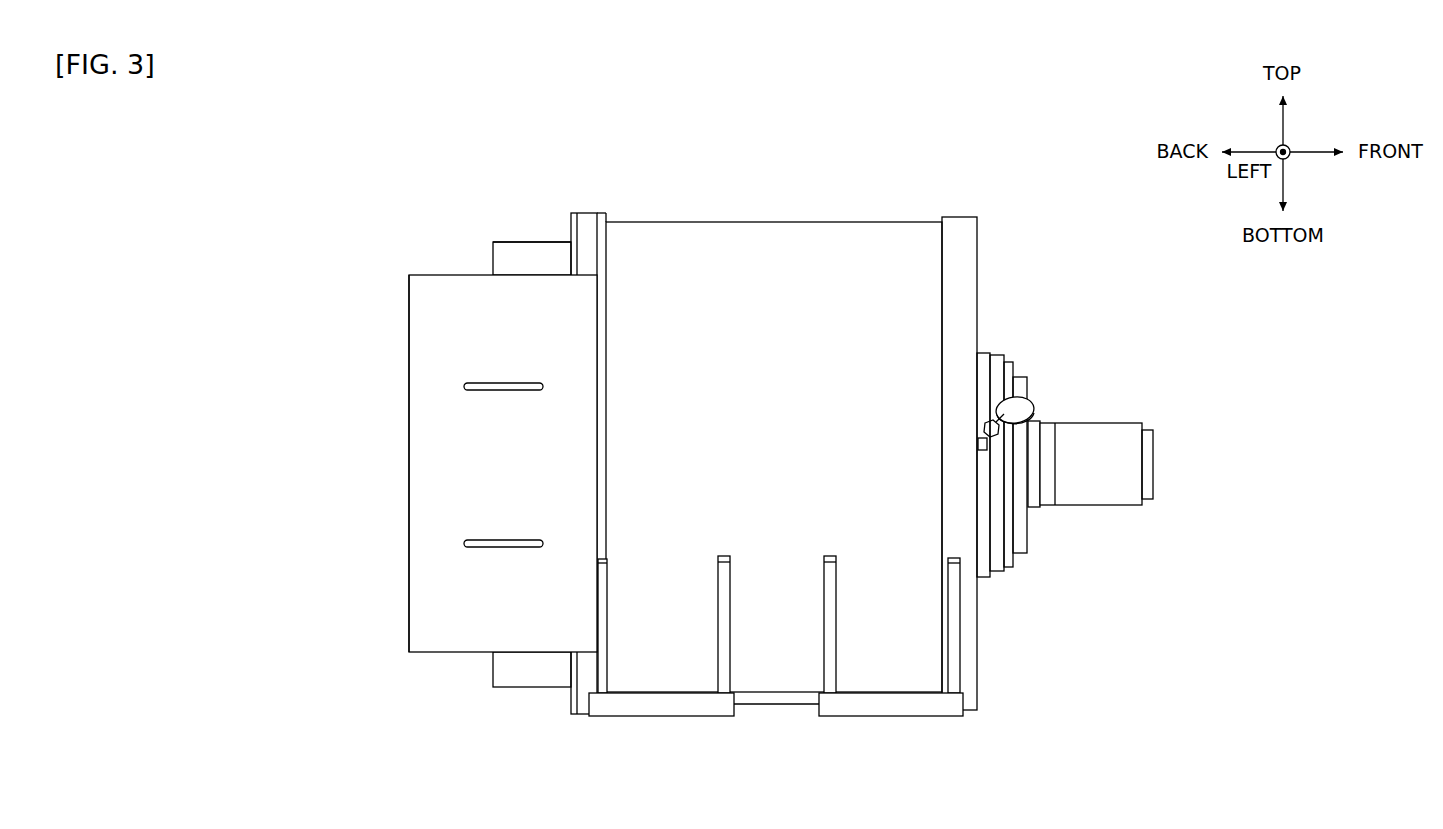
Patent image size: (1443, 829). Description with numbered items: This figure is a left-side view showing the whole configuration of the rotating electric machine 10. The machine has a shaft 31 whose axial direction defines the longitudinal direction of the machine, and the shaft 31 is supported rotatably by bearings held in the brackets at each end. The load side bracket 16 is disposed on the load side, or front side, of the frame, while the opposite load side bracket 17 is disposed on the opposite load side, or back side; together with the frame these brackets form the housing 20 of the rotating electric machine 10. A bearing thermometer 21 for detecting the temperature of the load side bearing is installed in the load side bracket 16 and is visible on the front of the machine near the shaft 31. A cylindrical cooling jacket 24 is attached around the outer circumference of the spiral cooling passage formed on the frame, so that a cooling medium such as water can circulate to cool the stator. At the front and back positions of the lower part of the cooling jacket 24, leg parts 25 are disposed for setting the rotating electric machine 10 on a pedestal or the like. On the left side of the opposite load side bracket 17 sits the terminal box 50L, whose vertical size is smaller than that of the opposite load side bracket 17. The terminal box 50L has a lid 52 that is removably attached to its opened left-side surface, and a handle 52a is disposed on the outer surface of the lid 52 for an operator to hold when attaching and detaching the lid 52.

The rotating electric machine 10 is at (958, 163).
The load side bracket 16 is at (968, 264).
The opposite load side bracket 17 is at (548, 252).
The housing 20 is at (511, 240).
The bearing thermometer 21 is at (1011, 413).
The cooling jacket 24 is at (794, 237).
The leg parts 25 is at (665, 706).
The shaft 31 is at (1113, 440).
The terminal box 50L is at (440, 431).
The lid 52 is at (452, 300).
The handle 52a is at (492, 545).